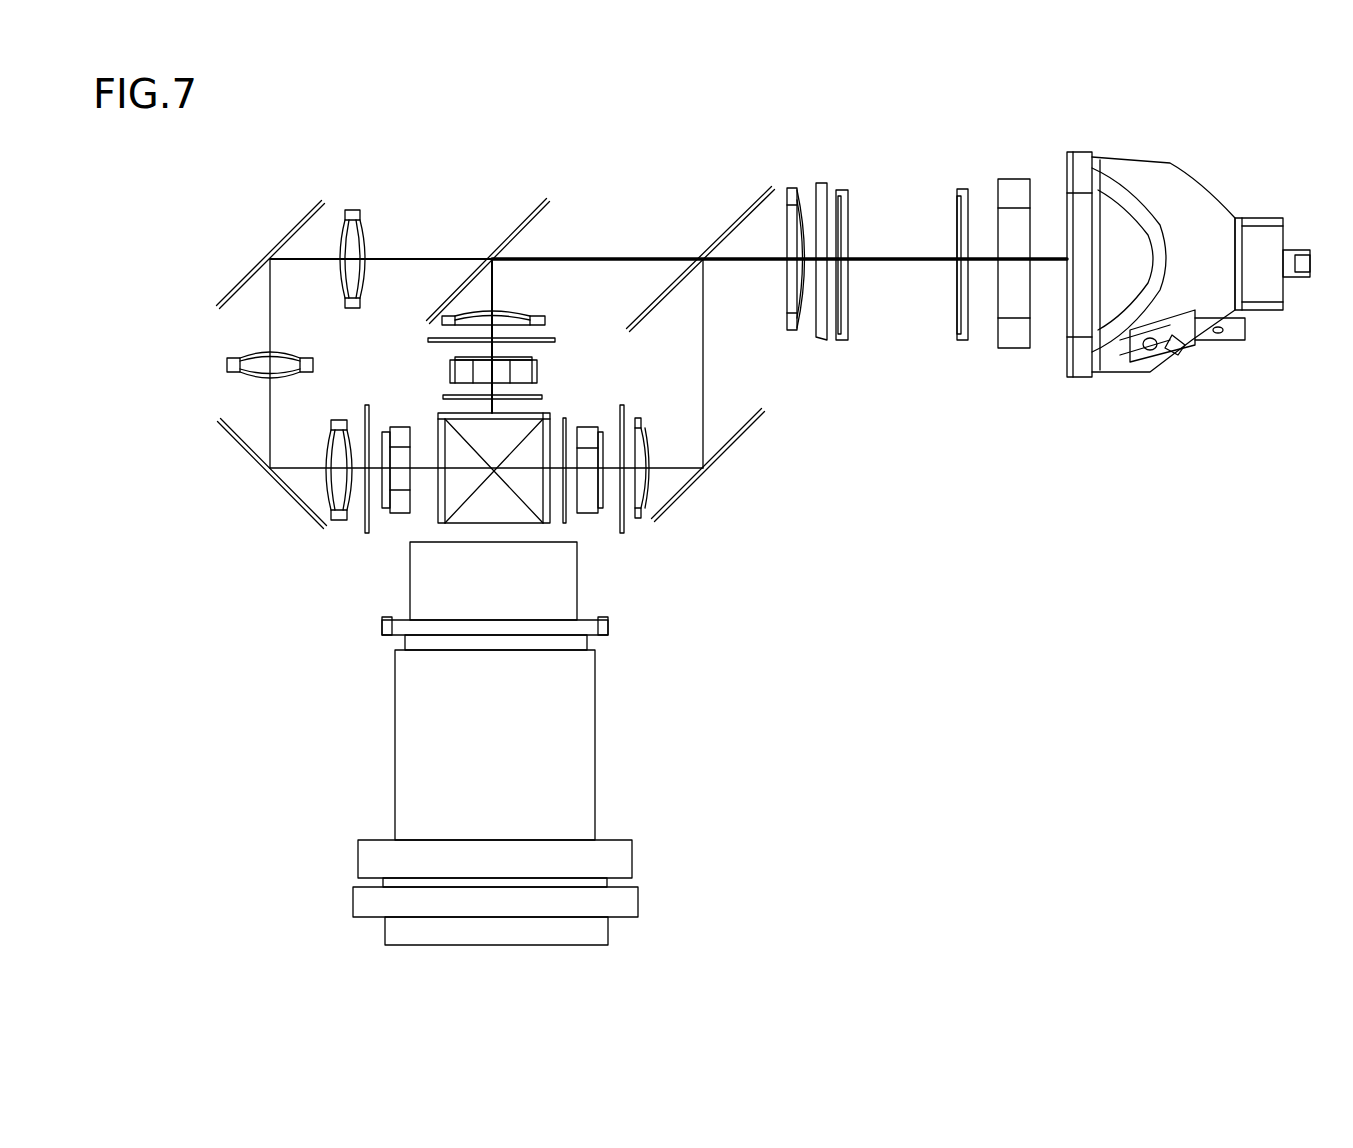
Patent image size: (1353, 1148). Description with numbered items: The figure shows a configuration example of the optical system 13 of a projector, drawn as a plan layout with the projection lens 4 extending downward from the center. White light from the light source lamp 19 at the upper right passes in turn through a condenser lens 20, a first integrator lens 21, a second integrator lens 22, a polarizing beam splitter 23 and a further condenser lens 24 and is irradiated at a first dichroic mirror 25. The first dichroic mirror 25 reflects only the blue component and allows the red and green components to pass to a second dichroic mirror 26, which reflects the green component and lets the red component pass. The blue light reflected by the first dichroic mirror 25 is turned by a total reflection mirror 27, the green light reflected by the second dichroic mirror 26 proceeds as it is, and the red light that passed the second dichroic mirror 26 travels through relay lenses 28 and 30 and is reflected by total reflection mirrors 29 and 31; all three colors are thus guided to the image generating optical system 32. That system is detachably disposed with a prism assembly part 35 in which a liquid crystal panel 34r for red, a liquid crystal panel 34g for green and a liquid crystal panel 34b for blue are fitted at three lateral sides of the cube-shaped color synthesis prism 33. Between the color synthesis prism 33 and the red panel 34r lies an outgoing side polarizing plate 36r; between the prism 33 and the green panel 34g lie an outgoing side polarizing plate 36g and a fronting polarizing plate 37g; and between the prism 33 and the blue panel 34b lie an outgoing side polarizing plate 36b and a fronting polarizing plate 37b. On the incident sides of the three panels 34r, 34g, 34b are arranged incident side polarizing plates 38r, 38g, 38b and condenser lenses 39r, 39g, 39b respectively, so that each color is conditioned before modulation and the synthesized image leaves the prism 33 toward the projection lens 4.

The projection lens 4 is at (595, 732).
The optical system 13 is at (885, 590).
The light source lamp 19 is at (1145, 150).
The condenser lens 20 is at (1012, 178).
The first integrator lens 21 is at (960, 188).
The second integrator lens 22 is at (846, 188).
The polarizing beam splitter 23 is at (821, 182).
The condenser lens 24 is at (790, 187).
The first dichroic mirror 25 is at (754, 192).
The second dichroic mirror 26 is at (522, 218).
The total reflection mirror 27 is at (748, 425).
The relay lens 28 is at (348, 209).
The total reflection mirror 29 is at (292, 233).
The relay lens 30 is at (225, 366).
The total reflection mirror 31 is at (243, 448).
The image generating optical system 32 is at (365, 548).
The color synthesis prism 33 is at (437, 522).
The liquid crystal panel for the red color 34r is at (395, 426).
The liquid crystal panel for the green color 34g is at (538, 370).
The liquid crystal panel for the blue color 34b is at (585, 518).
The prism assembly part 35 is at (400, 350).
The outgoing side polarizing plate 36r is at (440, 435).
The outgoing side polarizing plate 36g is at (546, 410).
The outgoing side polarizing plate 36b is at (550, 515).
The fronting polarizing plate 37g is at (545, 397).
The fronting polarizing plate 37b is at (565, 520).
The incident side polarizing plate 38r is at (370, 428).
The incident side polarizing plate 38g is at (555, 343).
The incident side polarizing plate 38b is at (620, 520).
The condenser lens 39r is at (335, 418).
The condenser lens 39g is at (545, 319).
The condenser lens 39b is at (645, 520).